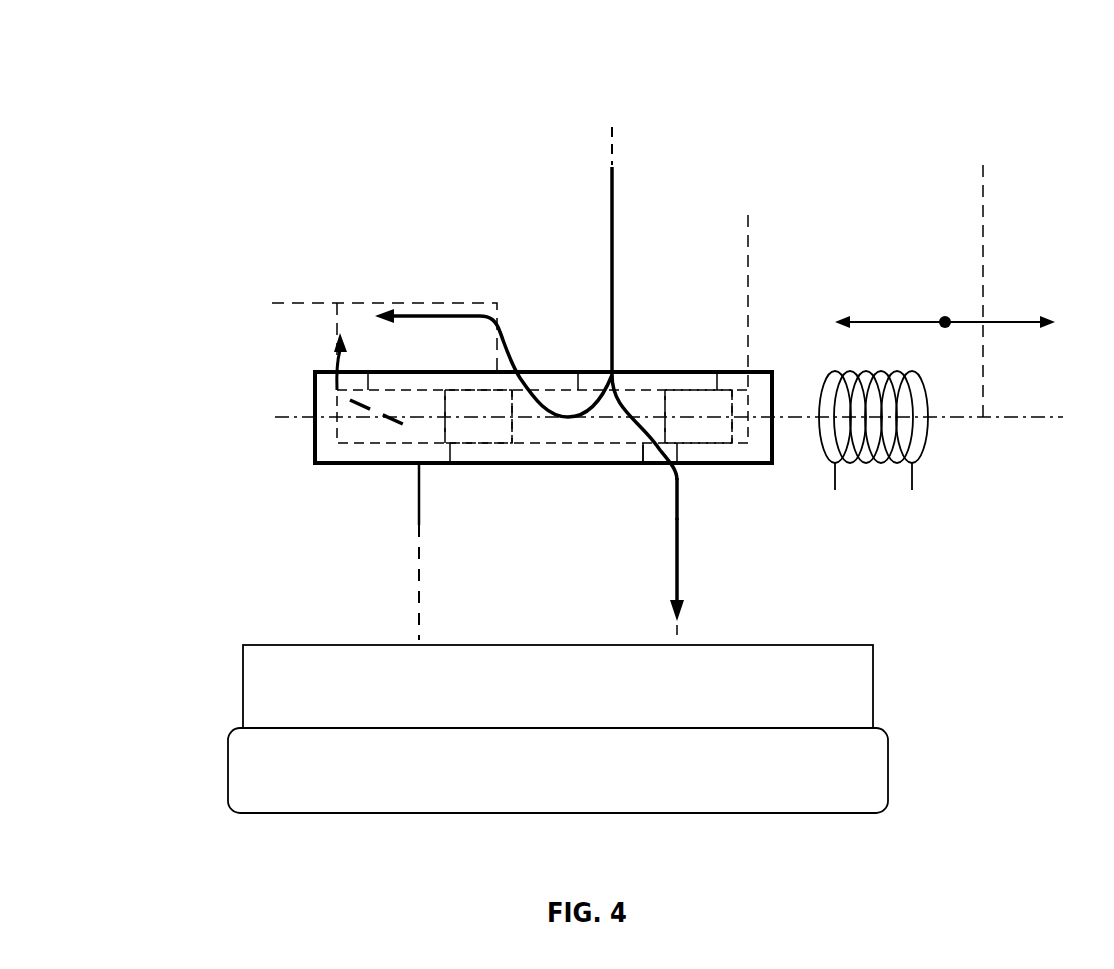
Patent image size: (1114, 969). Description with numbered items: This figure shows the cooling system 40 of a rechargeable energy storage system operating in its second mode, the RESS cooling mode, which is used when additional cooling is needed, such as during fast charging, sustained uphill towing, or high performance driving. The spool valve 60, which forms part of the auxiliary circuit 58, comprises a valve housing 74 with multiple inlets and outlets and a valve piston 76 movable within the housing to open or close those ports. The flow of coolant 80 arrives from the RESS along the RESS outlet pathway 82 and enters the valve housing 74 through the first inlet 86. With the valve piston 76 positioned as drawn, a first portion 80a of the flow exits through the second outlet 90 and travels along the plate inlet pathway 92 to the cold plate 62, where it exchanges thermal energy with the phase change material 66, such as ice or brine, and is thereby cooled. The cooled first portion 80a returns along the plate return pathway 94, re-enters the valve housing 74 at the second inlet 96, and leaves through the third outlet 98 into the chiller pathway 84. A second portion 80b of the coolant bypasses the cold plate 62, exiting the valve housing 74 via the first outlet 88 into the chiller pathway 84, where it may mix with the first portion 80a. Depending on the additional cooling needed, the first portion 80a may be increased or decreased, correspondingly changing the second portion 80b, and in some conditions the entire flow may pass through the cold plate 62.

The cooling system 40 is at (1034, 79).
The auxiliary circuit 58 is at (938, 562).
The spool valve 60 is at (315, 445).
The cold plate 62 is at (243, 677).
The phase change material 66 is at (822, 805).
The valve housing 74 is at (765, 465).
The valve piston 76 is at (705, 405).
The flow of coolant 80 is at (610, 188).
The first portion 80a is at (675, 575).
The second portion 80b is at (414, 316).
The RESS outlet pathway 82 is at (612, 150).
The chiller pathway 84 is at (292, 302).
The first inlet 86 is at (612, 372).
The first outlet 88 is at (497, 372).
The second outlet 90 is at (645, 465).
The plate inlet pathway 92 is at (678, 520).
The plate return pathway 94 is at (419, 572).
The second inlet 96 is at (413, 430).
The third outlet 98 is at (335, 350).